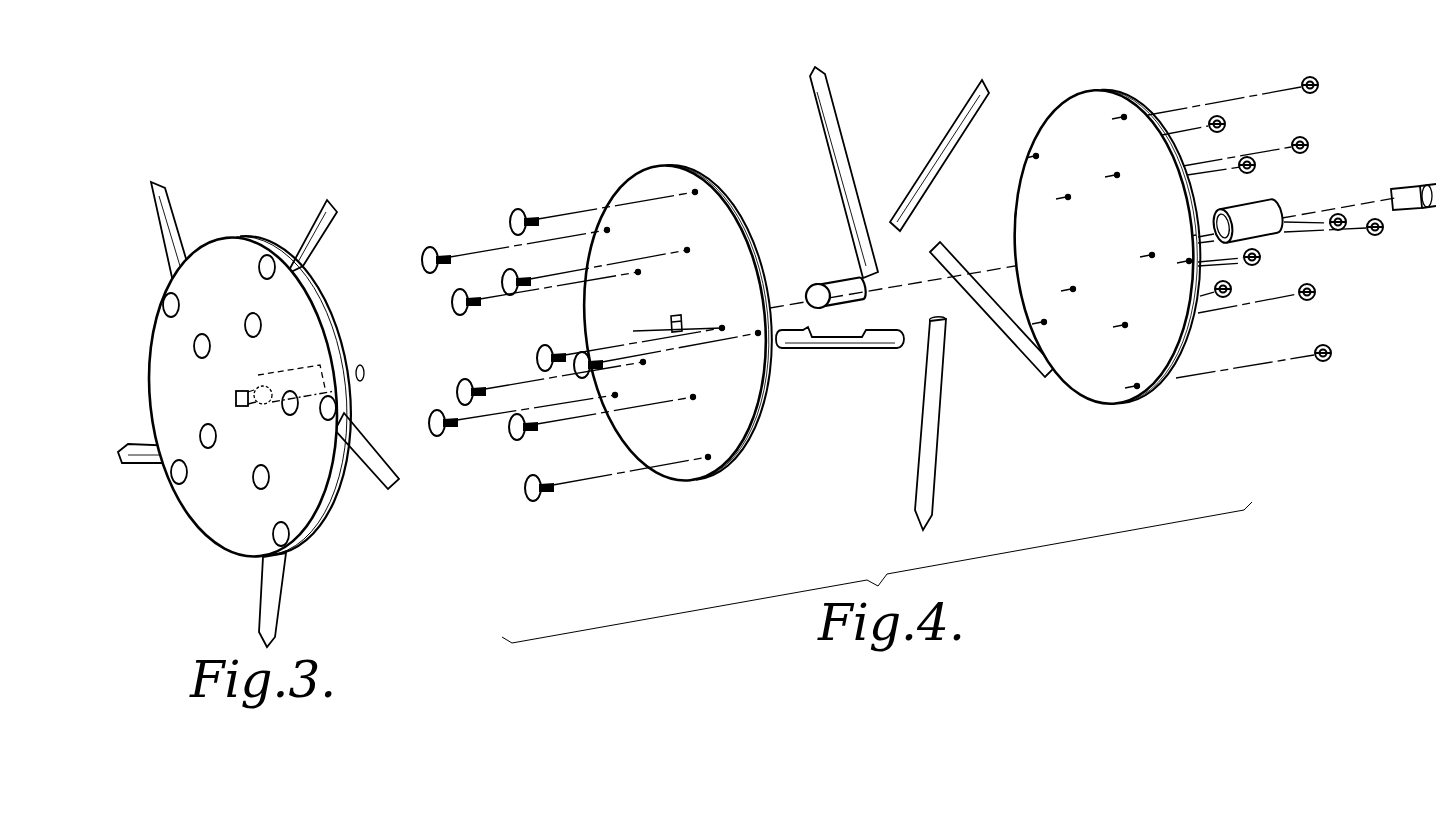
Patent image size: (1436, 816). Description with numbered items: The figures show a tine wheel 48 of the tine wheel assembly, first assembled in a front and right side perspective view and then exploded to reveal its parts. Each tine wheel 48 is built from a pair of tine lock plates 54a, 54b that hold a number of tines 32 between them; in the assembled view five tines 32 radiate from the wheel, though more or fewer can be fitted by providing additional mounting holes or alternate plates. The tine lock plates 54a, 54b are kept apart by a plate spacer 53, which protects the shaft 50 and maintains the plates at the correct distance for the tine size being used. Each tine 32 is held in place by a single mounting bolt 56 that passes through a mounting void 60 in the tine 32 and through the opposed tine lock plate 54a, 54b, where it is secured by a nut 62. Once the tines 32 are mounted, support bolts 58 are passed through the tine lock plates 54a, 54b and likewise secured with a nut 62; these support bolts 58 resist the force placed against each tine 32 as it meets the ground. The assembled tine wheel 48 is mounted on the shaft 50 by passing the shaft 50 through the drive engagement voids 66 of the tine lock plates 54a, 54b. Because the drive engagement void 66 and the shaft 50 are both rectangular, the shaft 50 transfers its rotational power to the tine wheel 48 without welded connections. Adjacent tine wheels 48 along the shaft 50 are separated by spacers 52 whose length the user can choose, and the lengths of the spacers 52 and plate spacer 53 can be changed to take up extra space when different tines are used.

In FIG. 3, the tine 32 is at (277, 600).
In FIG. 4, the tine 32 is at (820, 100).
In FIG. 3, the tine wheel 48 is at (214, 195).
In FIG. 4, the shaft 50 is at (1408, 188).
In FIG. 3, the spacer 52 is at (362, 385).
In FIG. 4, the spacer 52 is at (1273, 208).
In FIG. 4, the plate spacer 53 is at (842, 290).
In FIG. 4, the tine lock plate 54a is at (722, 455).
In FIG. 4, the tine lock plate 54b is at (1112, 402).
In FIG. 3, the mounting bolt 56 is at (200, 347).
In FIG. 4, the mounting bolt 56 is at (496, 296).
In FIG. 3, the support bolt 58 is at (171, 300).
In FIG. 4, the support bolt 58 is at (503, 218).
In FIG. 4, the mounting void 60 is at (870, 337).
In FIG. 4, the nut 62 is at (1300, 78).
In FIG. 4, the drive engagement void 66 is at (680, 318).